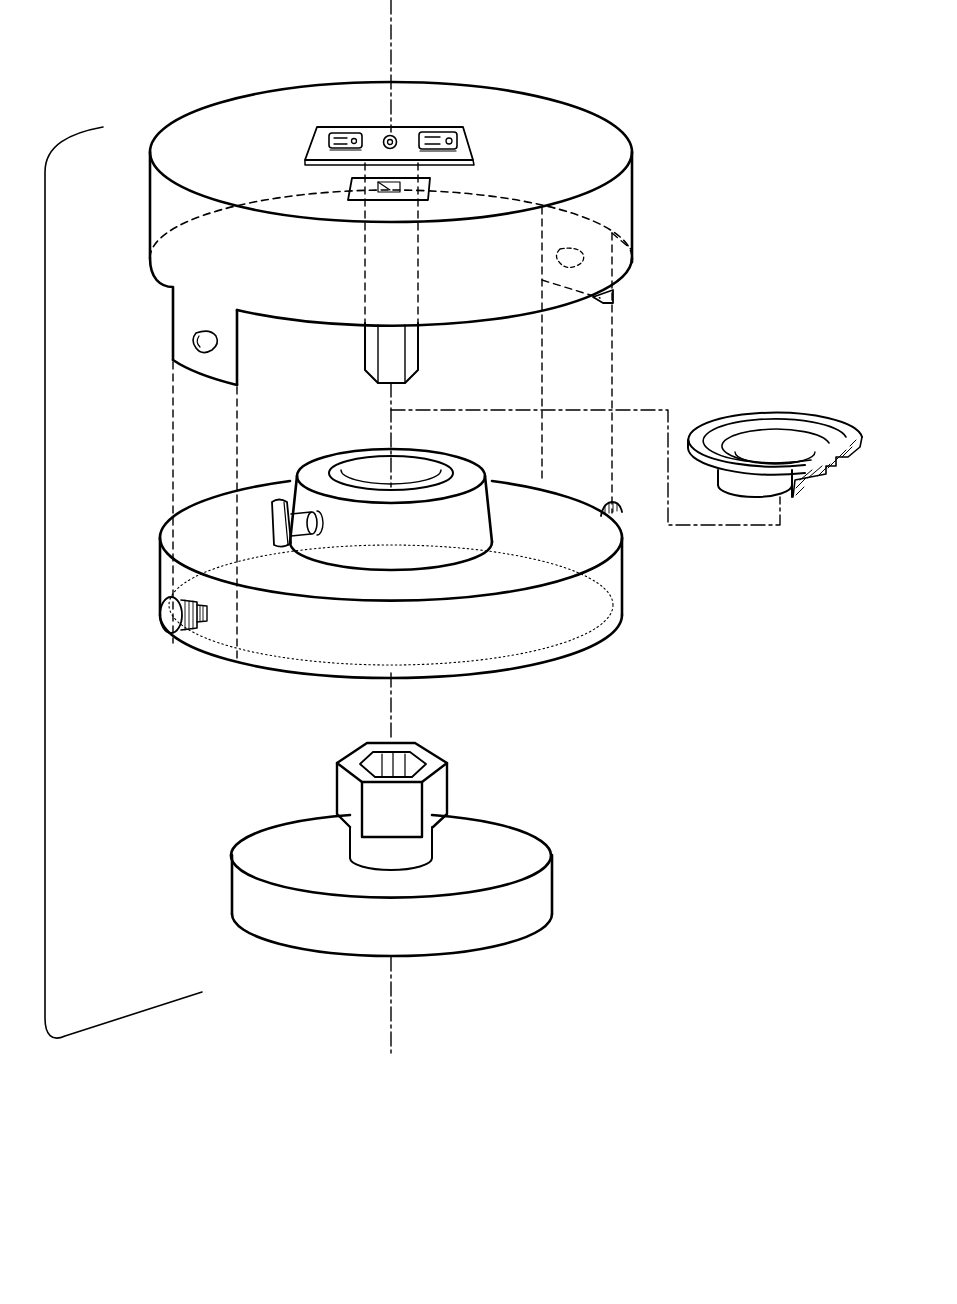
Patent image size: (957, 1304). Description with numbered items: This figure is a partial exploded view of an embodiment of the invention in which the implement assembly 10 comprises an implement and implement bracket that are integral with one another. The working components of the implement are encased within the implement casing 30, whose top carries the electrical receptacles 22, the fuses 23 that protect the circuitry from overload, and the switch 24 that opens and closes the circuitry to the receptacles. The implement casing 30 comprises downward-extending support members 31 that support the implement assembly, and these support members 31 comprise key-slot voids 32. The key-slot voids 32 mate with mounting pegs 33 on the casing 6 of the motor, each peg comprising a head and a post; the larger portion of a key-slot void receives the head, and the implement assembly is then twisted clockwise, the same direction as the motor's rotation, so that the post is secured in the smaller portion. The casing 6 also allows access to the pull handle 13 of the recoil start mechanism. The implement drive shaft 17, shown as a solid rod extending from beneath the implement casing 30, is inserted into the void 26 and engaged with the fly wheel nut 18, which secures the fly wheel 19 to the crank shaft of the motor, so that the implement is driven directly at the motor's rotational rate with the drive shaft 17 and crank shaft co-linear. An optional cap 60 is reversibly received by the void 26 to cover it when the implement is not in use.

The implement assembly 10 is at (634, 108).
The implement casing 30 is at (606, 205).
The support members 31 is at (185, 309).
The key-slot voids 32 is at (194, 340).
The electrical receptacles 22 is at (340, 132).
The fuses 23 is at (386, 136).
The switch 24 is at (400, 201).
The implement drive shaft 17 is at (372, 355).
The base 6 is at (190, 540).
The void 26 is at (420, 480).
The pull handle 13 is at (276, 508).
The mounting pegs 33 is at (172, 613).
The cap 60 is at (778, 412).
The fly wheel nut 18 is at (432, 797).
The fly wheel 19 is at (474, 843).